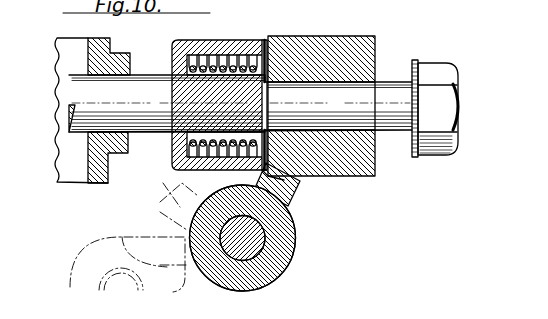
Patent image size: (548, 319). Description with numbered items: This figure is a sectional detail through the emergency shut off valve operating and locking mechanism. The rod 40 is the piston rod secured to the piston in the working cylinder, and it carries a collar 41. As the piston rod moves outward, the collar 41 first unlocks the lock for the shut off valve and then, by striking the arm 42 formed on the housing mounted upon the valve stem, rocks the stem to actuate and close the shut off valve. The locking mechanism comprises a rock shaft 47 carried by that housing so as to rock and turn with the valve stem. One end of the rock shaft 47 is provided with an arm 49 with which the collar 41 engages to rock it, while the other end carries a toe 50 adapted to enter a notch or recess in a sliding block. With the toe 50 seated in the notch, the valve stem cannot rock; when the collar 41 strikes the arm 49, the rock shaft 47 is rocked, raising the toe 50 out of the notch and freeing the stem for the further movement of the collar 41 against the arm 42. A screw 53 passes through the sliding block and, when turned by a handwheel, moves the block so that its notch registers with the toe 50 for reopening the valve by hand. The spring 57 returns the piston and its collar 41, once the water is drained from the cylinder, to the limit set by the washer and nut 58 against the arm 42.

The rod 40 is at (105, 97).
The collar 41 is at (247, 62).
The arm 42 is at (353, 48).
The rock shaft 47 is at (268, 247).
The arm 49 is at (291, 191).
The toe 50 is at (163, 202).
The screw 53 is at (504, 118).
The spring 57 is at (293, 35).
The washer and nut 58 is at (437, 73).